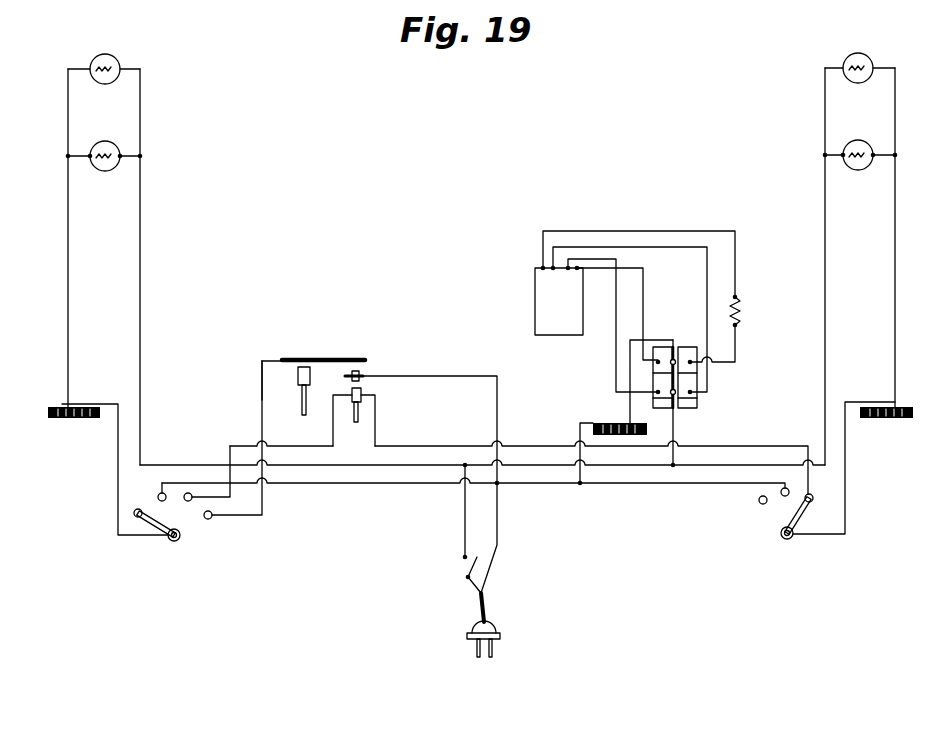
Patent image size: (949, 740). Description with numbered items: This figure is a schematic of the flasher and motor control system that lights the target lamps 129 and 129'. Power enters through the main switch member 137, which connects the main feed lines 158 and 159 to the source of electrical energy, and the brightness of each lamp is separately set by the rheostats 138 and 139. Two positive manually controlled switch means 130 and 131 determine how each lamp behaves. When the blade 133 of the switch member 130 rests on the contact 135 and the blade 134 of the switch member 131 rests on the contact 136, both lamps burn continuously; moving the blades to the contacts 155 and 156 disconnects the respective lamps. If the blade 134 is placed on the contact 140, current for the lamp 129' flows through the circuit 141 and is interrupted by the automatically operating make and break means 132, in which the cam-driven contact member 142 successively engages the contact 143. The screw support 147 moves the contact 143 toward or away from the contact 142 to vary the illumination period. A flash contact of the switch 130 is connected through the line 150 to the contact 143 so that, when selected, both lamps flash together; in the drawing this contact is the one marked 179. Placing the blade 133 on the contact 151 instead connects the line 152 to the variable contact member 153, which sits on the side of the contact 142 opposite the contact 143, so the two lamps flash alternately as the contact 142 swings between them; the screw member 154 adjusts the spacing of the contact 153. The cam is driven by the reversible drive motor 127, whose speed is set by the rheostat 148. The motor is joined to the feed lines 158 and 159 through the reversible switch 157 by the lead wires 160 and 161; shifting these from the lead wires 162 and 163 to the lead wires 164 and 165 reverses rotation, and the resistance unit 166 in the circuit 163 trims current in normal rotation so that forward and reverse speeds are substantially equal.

The electrical lamp 129 is at (131, 102).
The electrical lamp 129' is at (884, 102).
The rheostat 138 is at (63, 419).
The rheostat 139 is at (900, 420).
The rheostat 148 is at (604, 421).
The circuit 141 is at (430, 446).
The main feed line 158 is at (612, 485).
The main feed line 159 is at (638, 467).
The line 150 is at (237, 445).
The switch member 130 is at (152, 502).
The contact 135 is at (158, 495).
The flash contact 179 is at (189, 489).
The contact 151 is at (214, 516).
The contact 155 is at (134, 515).
The blade 133 is at (166, 531).
The switch member 131 is at (809, 518).
The contact 136 is at (790, 490).
The contact 140 is at (814, 498).
The contact 156 is at (759, 503).
The blade 134 is at (800, 521).
The make and break means 132 is at (379, 382).
The variable contact member 153 is at (357, 358).
The screw member 154 is at (301, 399).
The contact member 142 is at (367, 376).
The contact 143 is at (362, 395).
The screw support 147 is at (355, 419).
The line 152 is at (262, 377).
The drive motor 127 is at (535, 285).
The lead wire 162 is at (675, 247).
The lead wire 163 is at (708, 231).
The lead wire 164 is at (615, 320).
The lead wire 165 is at (645, 313).
The resistance unit 166 is at (745, 312).
The reversible switch 157 is at (691, 405).
The lead wire 160 is at (627, 370).
The lead wire 161 is at (674, 428).
The main switch member 137 is at (465, 568).